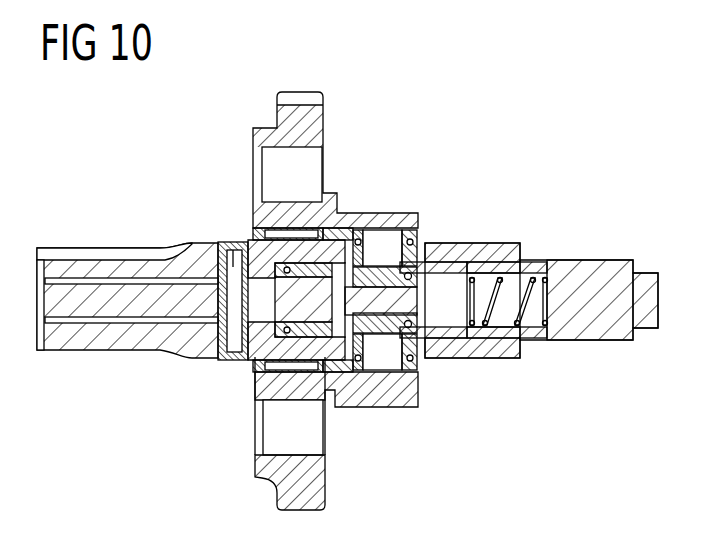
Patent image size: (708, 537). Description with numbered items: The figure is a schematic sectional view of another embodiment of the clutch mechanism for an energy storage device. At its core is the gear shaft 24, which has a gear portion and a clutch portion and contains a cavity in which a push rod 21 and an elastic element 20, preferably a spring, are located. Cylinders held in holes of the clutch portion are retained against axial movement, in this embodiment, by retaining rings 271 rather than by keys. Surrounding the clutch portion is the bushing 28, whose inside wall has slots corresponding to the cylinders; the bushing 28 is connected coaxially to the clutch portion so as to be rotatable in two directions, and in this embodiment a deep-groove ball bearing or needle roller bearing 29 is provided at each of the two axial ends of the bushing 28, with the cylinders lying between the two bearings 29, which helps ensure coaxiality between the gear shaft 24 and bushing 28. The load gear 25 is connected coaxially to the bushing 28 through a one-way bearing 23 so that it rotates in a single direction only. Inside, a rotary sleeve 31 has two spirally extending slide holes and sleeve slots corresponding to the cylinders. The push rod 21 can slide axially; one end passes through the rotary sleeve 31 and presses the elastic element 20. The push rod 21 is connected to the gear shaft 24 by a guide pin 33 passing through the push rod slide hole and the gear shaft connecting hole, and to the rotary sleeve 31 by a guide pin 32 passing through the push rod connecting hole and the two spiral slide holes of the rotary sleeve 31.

The elastic element 20 is at (530, 300).
The push rod 21 is at (80, 302).
The one-way bearing 23 is at (288, 168).
The gear shaft 24 is at (133, 333).
The load gear 25 is at (270, 465).
The bushing 28 is at (272, 217).
The deep-groove ball bearing or needle roller bearing 29 is at (292, 233).
The rotary sleeve 31 is at (367, 325).
The guide pin 32 is at (340, 330).
The guide pin 33 is at (230, 237).
The retaining ring 271 is at (357, 235).